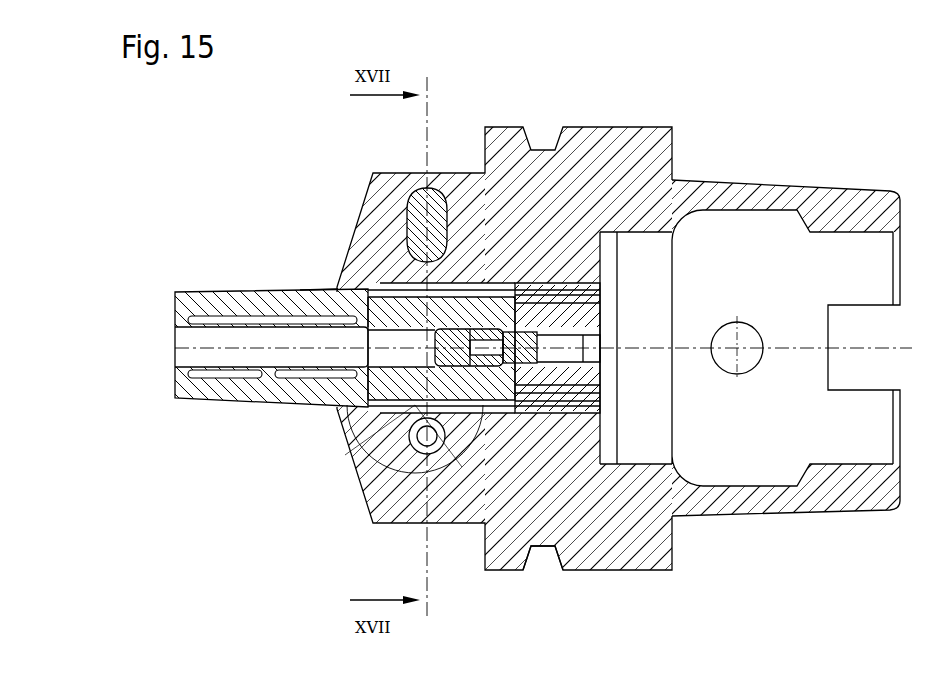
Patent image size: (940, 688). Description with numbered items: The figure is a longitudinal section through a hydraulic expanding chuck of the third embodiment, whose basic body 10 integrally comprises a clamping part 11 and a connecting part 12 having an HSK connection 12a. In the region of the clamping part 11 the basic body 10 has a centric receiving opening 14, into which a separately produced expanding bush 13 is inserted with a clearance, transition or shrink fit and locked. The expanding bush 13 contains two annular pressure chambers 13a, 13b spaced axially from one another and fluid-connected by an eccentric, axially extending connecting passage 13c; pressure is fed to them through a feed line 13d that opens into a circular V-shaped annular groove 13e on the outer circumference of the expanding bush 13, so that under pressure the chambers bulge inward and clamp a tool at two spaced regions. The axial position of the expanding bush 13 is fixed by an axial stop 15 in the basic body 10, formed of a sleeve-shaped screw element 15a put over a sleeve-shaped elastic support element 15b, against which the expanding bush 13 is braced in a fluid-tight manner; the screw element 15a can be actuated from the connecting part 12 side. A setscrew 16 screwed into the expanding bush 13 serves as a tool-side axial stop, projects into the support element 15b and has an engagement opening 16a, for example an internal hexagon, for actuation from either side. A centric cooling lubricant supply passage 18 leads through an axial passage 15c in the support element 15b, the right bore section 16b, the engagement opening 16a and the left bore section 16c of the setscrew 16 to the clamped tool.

The basic body 10 is at (563, 512).
The clamping part 11 is at (352, 516).
The connecting part 12 is at (724, 535).
The HSK connection 12a is at (755, 182).
The expanding bush 13 is at (313, 406).
The pressure chamber 13a is at (271, 347).
The pressure chamber 13b is at (272, 355).
The connecting passage 13c is at (272, 333).
The feed line 13d is at (337, 290).
The annular groove 13e is at (351, 450).
The centric receiving opening 14 is at (465, 277).
The axial stop 15 is at (582, 440).
The screw element 15a is at (538, 412).
The support element 15b is at (592, 318).
The axial passage 15c is at (590, 337).
The setscrew 16 is at (440, 311).
The engagement opening 16a is at (488, 340).
The right bore section 16b is at (520, 345).
The left bore section 16c is at (443, 350).
The cooling lubricant supply passage 18 is at (587, 353).